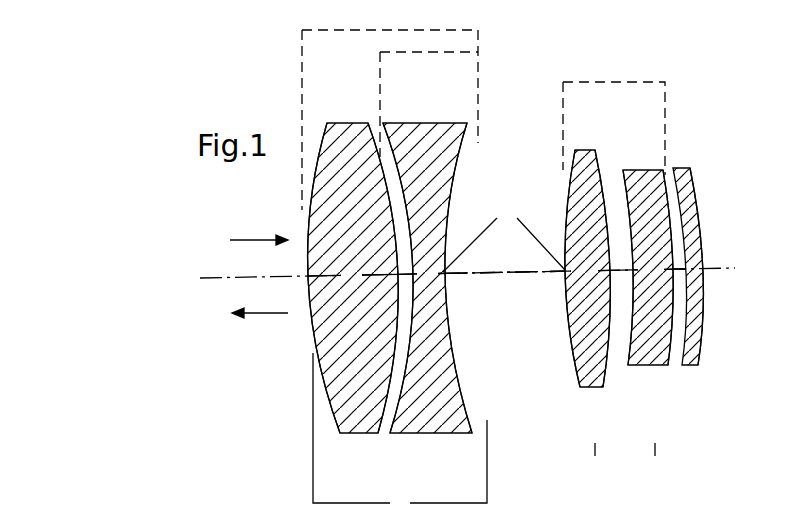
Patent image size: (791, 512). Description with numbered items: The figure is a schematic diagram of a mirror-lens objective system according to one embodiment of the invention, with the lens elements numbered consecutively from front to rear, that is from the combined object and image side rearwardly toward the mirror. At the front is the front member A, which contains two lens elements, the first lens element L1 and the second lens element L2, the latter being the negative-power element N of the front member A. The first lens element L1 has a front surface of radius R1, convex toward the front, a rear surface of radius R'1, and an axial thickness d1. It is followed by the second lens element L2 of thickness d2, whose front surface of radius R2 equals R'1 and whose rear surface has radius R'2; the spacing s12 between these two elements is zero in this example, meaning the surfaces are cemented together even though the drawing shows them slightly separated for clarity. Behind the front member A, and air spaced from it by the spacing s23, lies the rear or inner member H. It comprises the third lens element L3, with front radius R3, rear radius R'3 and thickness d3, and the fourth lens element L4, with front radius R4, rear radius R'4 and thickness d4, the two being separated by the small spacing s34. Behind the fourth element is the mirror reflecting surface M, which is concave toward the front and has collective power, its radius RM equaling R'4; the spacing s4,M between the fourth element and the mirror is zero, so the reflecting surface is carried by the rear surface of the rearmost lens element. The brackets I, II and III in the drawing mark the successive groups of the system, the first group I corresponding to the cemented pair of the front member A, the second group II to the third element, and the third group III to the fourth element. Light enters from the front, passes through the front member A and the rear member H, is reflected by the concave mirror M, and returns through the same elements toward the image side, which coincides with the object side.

The first lens element L1 is at (351, 420).
The second lens element L2 is at (445, 415).
The third lens element L3 is at (592, 387).
The fourth lens element L4 is at (653, 355).
The mirror reflecting surface M is at (690, 365).
The front surface radius of element one R1 is at (325, 137).
The rear surface radius of element one R'1 is at (373, 251).
The front surface radius of element two R2 is at (390, 137).
The rear surface radius of element two R'2 is at (457, 251).
The front surface radius of element three R3 is at (567, 214).
The rear surface radius of element three R'3 is at (594, 248).
The front surface radius of element four R4 is at (624, 178).
The rear surface radius of element four R'4 is at (681, 232).
The mirror radius RM is at (692, 184).
The thickness of element one d1 is at (353, 277).
The thickness of element two d2 is at (429, 277).
The thickness of element three d3 is at (587, 275).
The thickness of element four d4 is at (653, 275).
The spacing between elements one and two s12 is at (405, 276).
The spacing between elements two and three s23 is at (505, 274).
The spacing between elements three and four s34 is at (620, 271).
The spacing between element four and mirror s4,M is at (681, 272).
The front member A is at (390, 113).
The negative lens element N is at (429, 97).
The rear member H is at (614, 120).
The first lens component I is at (400, 432).
The second lens component II is at (595, 460).
The third lens component III is at (657, 460).